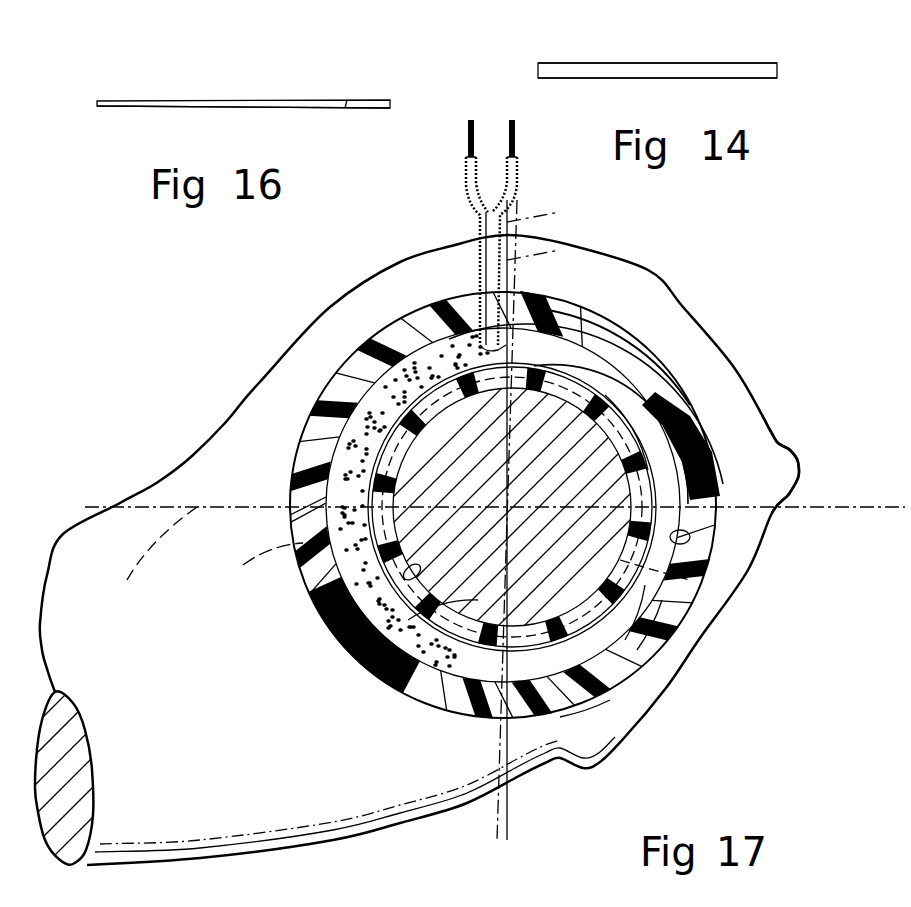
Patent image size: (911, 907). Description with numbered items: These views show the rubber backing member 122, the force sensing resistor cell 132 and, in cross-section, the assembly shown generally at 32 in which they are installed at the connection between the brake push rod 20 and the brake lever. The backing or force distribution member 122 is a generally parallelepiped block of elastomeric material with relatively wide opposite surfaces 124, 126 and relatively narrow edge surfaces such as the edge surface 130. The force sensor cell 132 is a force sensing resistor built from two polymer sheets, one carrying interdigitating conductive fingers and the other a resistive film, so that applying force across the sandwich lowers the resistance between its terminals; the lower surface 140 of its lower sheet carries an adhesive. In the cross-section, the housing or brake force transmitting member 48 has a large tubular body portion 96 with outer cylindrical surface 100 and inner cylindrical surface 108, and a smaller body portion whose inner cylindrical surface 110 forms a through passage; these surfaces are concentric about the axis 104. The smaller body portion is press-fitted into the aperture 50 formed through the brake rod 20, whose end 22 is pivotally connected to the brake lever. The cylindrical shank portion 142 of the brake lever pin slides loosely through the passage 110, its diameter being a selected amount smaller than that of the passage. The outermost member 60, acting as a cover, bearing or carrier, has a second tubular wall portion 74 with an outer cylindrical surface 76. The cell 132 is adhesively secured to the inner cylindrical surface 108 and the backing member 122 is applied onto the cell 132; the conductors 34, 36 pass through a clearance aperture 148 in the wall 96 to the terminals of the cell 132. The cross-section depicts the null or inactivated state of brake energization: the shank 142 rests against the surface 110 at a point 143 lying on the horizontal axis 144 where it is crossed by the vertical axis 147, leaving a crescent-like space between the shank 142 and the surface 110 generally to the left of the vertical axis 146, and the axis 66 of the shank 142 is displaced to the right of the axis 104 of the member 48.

In FIG. 17, the brake actuating rod 20 is at (320, 835).
In FIG. 17, the right end of push rod 22 is at (770, 432).
In FIG. 17, the sensor assembly 32 is at (707, 267).
In FIG. 17, the conductor 34 is at (466, 140).
In FIG. 17, the conductor 36 is at (518, 135).
In FIG. 17, the housing 48 is at (345, 350).
In FIG. 17, the aperture 50 is at (690, 580).
In FIG. 17, the outermost member 60 is at (672, 640).
In FIG. 17, the axis of shank 66 is at (535, 514).
In FIG. 17, the second tubular wall portion 74 is at (664, 356).
In FIG. 17, the outer cylindrical surface 76 is at (600, 312).
In FIG. 17, the first tubular cylindrical body portion 96 is at (665, 617).
In FIG. 17, the outer cylindrical surface 100 is at (640, 700).
In FIG. 17, the axis 104 is at (497, 492).
In FIG. 17, the inner cylindrical surface 108 is at (700, 545).
In FIG. 17, the inner cylindrical surface 110 is at (683, 389).
In FIG. 14, the backing member 122 is at (630, 80).
In FIG. 17, the backing member 122 is at (378, 602).
In FIG. 14, the wide surface 124 is at (690, 63).
In FIG. 14, the wide surface 126 is at (698, 80).
In FIG. 17, the wide surface 126 is at (450, 655).
In FIG. 14, the edge surface 130 is at (593, 70).
In FIG. 16, the force sensor cell 132 is at (238, 100).
In FIG. 17, the force sensor cell 132 is at (325, 437).
In FIG. 16, the lower surface 140 is at (283, 108).
In FIG. 17, the lower surface 140 is at (350, 556).
In FIG. 17, the cylindrical shank portion 142 is at (418, 568).
In FIG. 17, the contact point 143 is at (630, 503).
In FIG. 17, the horizontal axis 144 is at (145, 558).
In FIG. 17, the vertical axis 146 is at (540, 215).
In FIG. 17, the vertical axis 147 is at (560, 250).
In FIG. 17, the clearance aperture 148 is at (478, 262).